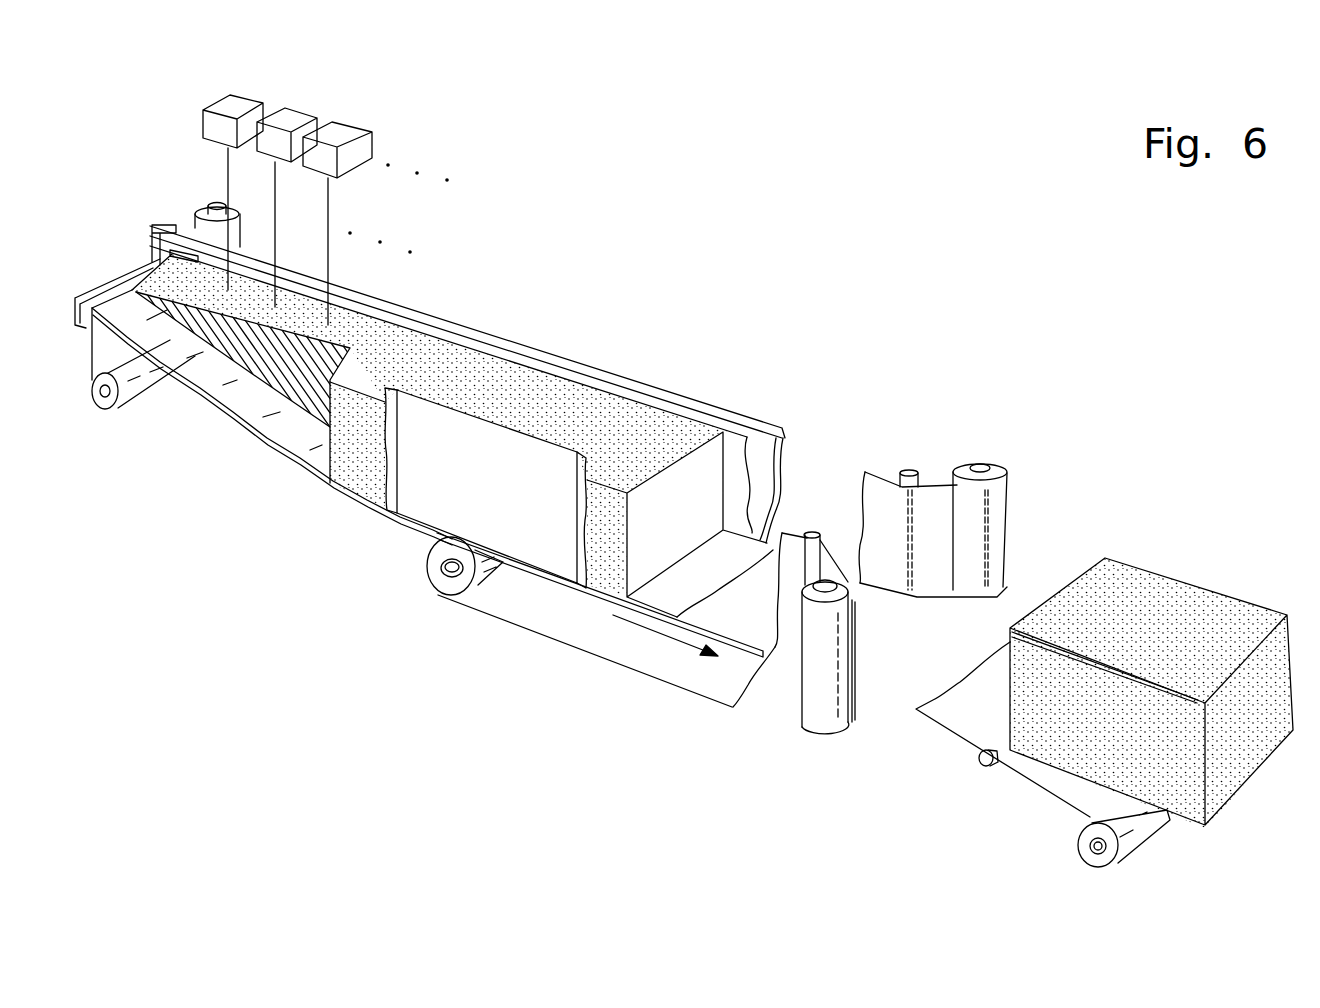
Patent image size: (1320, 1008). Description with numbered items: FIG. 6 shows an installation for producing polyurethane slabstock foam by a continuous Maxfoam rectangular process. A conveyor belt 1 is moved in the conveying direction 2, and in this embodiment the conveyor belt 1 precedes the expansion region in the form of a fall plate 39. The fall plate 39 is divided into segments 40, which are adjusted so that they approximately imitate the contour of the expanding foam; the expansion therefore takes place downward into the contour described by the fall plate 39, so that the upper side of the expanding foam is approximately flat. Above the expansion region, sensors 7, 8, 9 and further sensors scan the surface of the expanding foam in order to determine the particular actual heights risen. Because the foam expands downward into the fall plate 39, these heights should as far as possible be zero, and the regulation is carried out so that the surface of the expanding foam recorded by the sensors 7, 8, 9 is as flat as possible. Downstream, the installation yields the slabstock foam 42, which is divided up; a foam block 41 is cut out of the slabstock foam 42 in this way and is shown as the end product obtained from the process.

The conveyor belt 1 is at (553, 640).
The conveying direction 2 is at (665, 637).
The sensor 7 is at (233, 105).
The sensor 8 is at (293, 117).
The sensor 9 is at (347, 130).
The fall plate 39 is at (275, 462).
The segments 40 is at (188, 387).
The foam block 41 is at (1208, 627).
The slabstock foam 42 is at (658, 437).